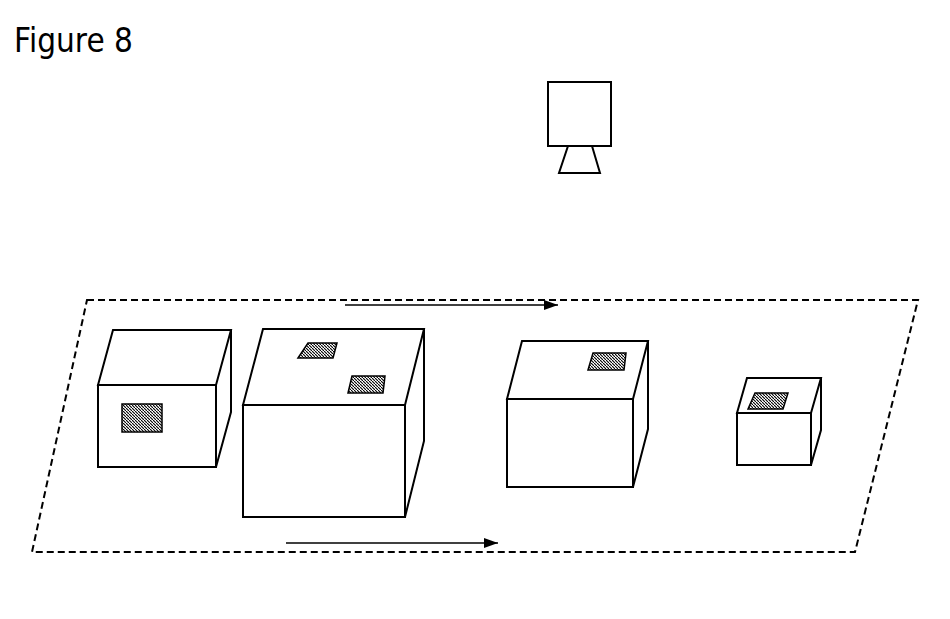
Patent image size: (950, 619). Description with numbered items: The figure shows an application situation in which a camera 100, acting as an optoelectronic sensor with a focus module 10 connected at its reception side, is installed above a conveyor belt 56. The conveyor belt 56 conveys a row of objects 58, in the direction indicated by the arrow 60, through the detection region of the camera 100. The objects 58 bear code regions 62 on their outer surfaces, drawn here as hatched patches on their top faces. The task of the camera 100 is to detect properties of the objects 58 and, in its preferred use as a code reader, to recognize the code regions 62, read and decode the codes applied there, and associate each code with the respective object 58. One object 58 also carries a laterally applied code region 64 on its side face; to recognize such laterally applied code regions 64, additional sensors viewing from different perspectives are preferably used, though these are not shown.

The camera 100 is at (626, 107).
The focus module 10 is at (650, 152).
The conveyor belt 56 is at (475, 452).
The objects 58 is at (431, 389).
The arrow 60 is at (422, 455).
The code regions 62 is at (713, 337).
The laterally applied code regions 64 is at (127, 454).